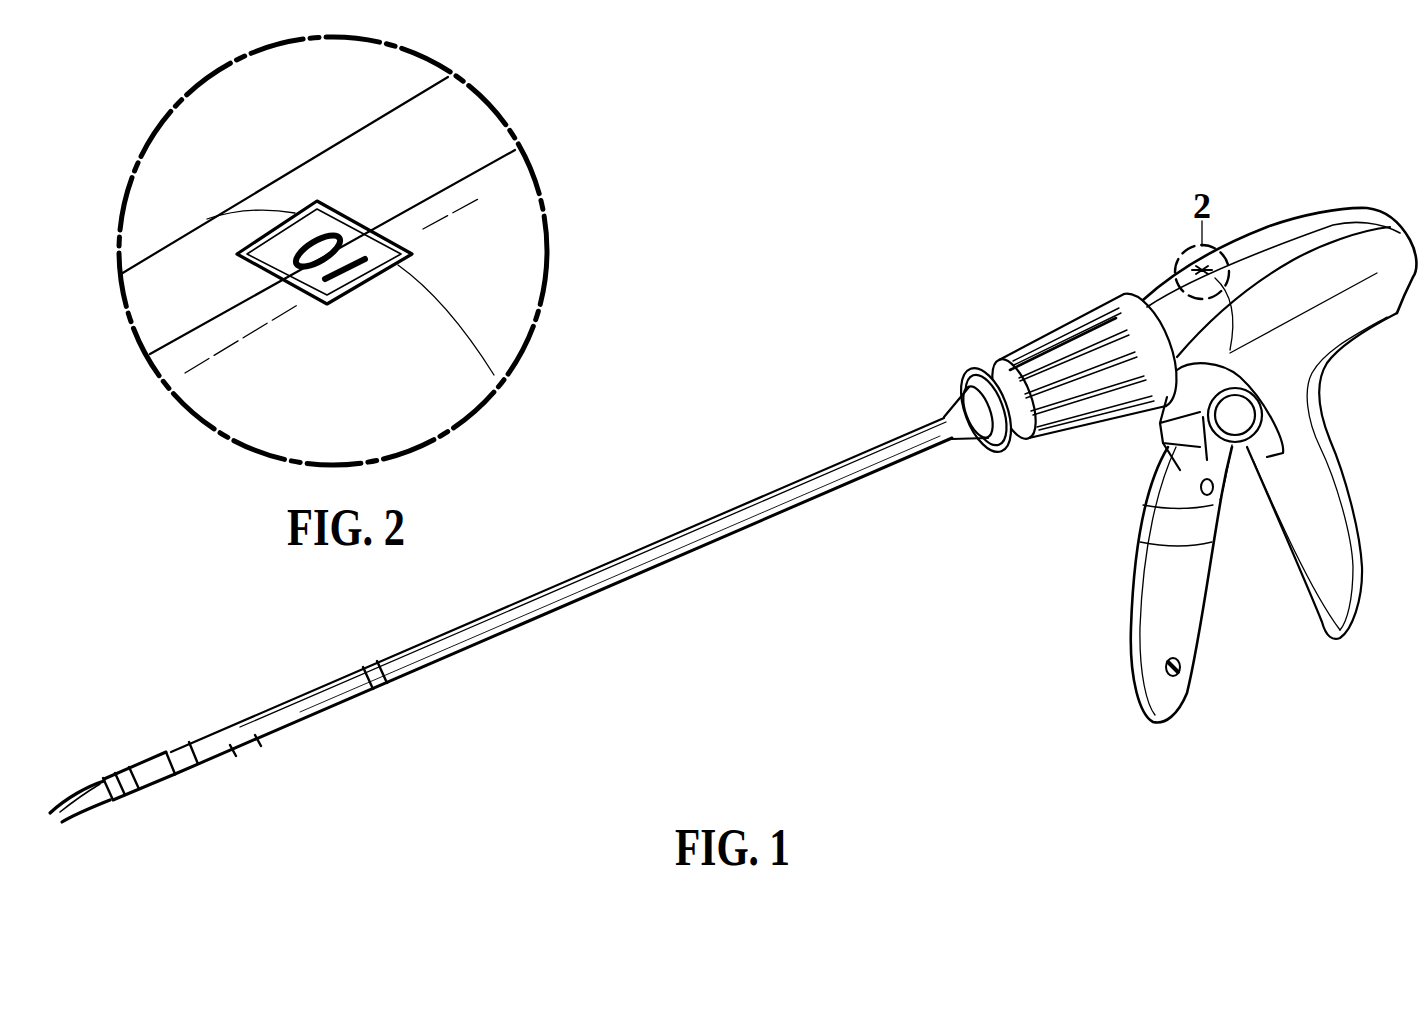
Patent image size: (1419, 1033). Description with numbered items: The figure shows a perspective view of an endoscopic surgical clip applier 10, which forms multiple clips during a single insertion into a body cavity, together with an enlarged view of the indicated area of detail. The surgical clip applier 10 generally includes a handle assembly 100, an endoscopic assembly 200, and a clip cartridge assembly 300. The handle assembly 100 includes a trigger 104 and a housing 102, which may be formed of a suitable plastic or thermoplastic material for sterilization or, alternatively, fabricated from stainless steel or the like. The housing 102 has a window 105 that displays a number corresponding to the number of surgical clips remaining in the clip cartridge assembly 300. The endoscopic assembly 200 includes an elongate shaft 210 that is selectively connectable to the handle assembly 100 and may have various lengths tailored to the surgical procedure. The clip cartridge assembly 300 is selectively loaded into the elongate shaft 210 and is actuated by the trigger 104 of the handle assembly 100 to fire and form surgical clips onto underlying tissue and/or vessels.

In FIG. 1, the surgical clip applier 10 is at (787, 352).
In FIG. 1, the handle assembly 100 is at (1288, 194).
In FIG. 1, the housing 102 is at (1402, 247).
In FIG. 2, the housing 102 is at (455, 119).
In FIG. 1, the trigger 104 is at (1132, 627).
In FIG. 2, the window 105 is at (322, 226).
In FIG. 1, the endoscopic assembly 200 is at (957, 480).
In FIG. 1, the elongate shaft 210 is at (788, 507).
In FIG. 1, the clip cartridge assembly 300 is at (221, 720).